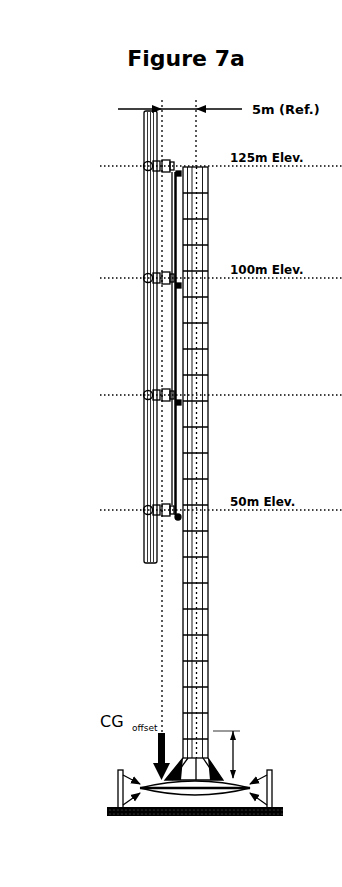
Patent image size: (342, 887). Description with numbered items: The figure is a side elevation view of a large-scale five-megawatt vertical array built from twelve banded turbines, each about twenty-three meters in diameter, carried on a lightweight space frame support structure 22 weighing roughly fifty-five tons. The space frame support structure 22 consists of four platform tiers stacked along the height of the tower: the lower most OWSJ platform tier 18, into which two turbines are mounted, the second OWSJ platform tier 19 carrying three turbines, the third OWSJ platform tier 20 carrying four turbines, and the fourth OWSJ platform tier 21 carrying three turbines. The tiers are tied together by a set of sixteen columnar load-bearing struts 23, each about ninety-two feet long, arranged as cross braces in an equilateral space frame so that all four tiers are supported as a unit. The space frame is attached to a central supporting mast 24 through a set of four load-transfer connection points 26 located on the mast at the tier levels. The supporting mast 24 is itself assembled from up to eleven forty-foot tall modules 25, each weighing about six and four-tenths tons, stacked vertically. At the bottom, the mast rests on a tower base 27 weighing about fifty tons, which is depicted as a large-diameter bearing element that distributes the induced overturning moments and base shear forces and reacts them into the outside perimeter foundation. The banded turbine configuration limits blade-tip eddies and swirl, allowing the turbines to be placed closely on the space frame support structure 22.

The lower most OWSJ platform tier 18 is at (150, 565).
The second OWSJ platform tier 19 is at (167, 403).
The third OWSJ platform tier 20 is at (167, 287).
The fourth OWSJ platform tier 21 is at (167, 177).
The space frame support structure 22 is at (177, 380).
The columnar load-bearing strut 23 is at (341, 373).
The supporting mast 24 is at (197, 620).
The module 25 is at (235, 757).
The load-transfer connection point 26 is at (178, 517).
The tower base 27 is at (143, 779).